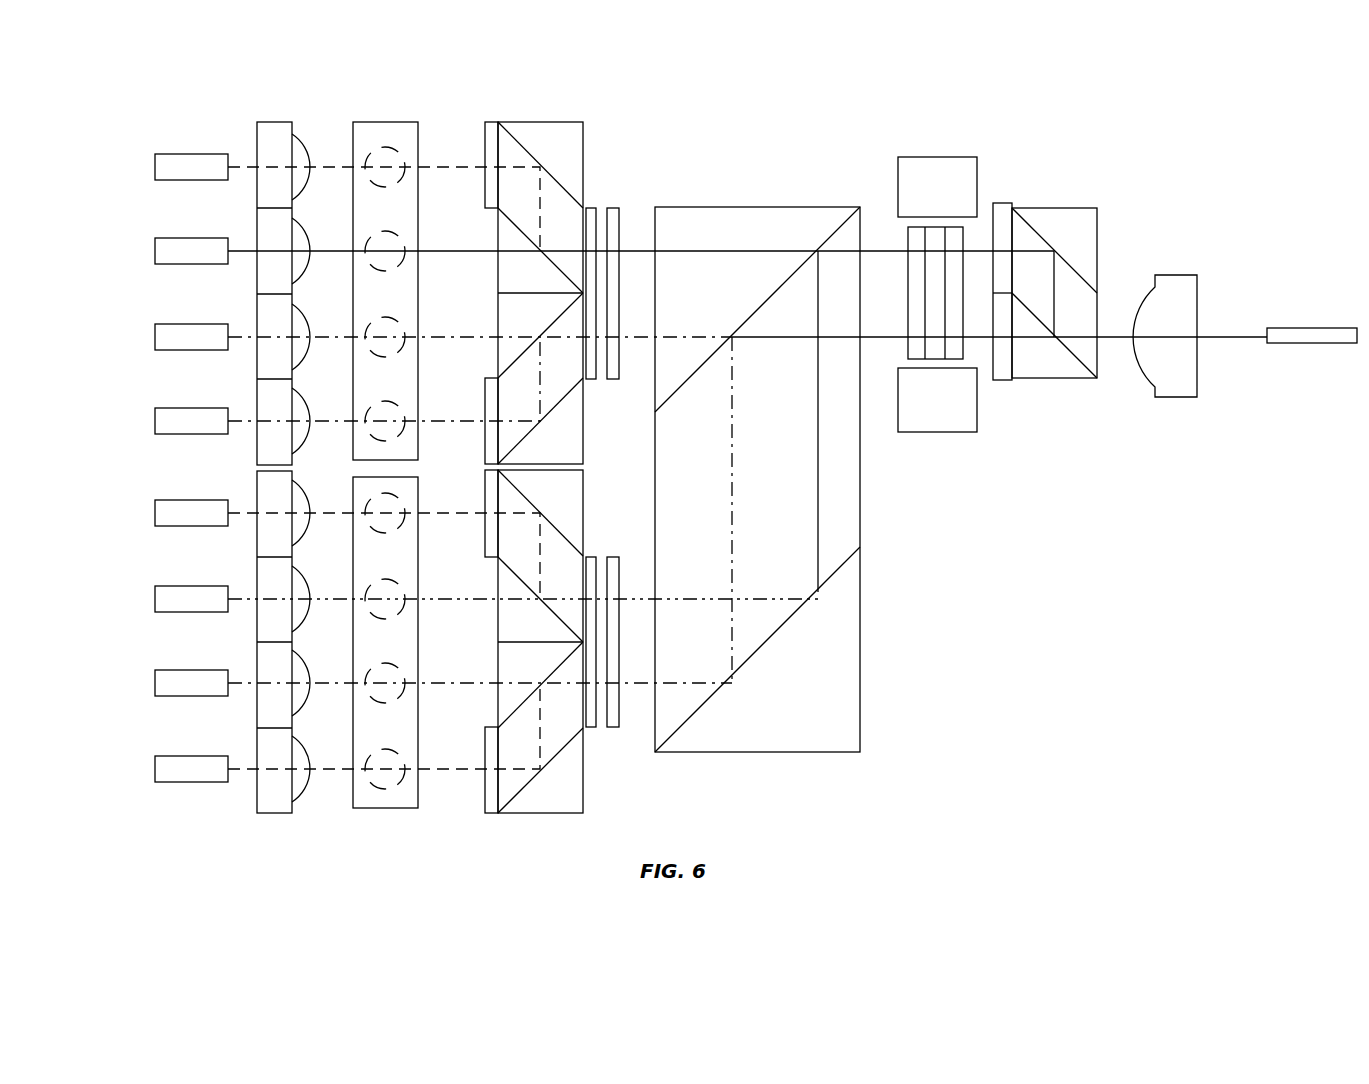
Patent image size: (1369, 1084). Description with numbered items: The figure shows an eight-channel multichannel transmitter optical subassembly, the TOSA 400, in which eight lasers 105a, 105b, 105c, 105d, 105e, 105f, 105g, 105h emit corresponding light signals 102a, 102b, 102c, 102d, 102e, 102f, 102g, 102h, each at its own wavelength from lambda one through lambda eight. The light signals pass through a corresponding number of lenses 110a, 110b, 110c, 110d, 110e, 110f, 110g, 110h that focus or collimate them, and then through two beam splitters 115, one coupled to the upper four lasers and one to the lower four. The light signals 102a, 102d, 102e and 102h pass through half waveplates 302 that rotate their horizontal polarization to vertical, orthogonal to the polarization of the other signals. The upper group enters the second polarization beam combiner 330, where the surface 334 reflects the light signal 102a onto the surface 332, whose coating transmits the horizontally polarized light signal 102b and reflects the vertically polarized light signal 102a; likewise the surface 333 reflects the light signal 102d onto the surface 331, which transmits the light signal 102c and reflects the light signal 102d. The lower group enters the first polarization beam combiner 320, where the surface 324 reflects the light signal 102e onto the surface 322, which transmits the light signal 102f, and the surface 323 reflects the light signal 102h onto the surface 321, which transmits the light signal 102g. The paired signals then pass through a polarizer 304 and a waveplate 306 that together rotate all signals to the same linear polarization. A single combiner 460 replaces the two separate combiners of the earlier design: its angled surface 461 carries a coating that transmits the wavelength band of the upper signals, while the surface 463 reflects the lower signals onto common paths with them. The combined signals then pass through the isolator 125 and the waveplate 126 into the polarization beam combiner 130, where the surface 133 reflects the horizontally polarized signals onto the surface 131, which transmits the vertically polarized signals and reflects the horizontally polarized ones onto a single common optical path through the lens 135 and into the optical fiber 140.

The lens 110a is at (267, 158).
The lens 110b is at (267, 242).
The lens 110c is at (267, 328).
The lens 110d is at (267, 412).
The lens 110e is at (267, 504).
The lens 110f is at (267, 590).
The lens 110g is at (267, 674).
The lens 110h is at (267, 760).
The laser 105a is at (177, 168).
The laser 105b is at (177, 252).
The laser 105c is at (177, 338).
The laser 105d is at (177, 422).
The laser 105e is at (177, 514).
The laser 105f is at (177, 600).
The laser 105g is at (177, 684).
The laser 105h is at (177, 770).
The light signal 102a is at (268, 168).
The light signal 102b is at (268, 252).
The light signal 102c is at (268, 338).
The light signal 102d is at (268, 422).
The light signal 102e is at (268, 514).
The light signal 102f is at (268, 600).
The light signal 102g is at (268, 684).
The light signal 102h is at (268, 770).
The beam splitter 115 is at (365, 135).
The waveplate 302 is at (490, 390).
The second polarization beam combiner 330 is at (500, 126).
The surface 334 is at (535, 158).
The surface 332 is at (513, 220).
The surface 331 is at (548, 330).
The surface 333 is at (540, 421).
The polarizer 304 is at (592, 210).
The waveplate 306 is at (613, 214).
The first polarization beam combiner 320 is at (506, 806).
The surface 324 is at (540, 513).
The surface 322 is at (550, 605).
The surface 321 is at (583, 778).
The surface 323 is at (533, 780).
The combiner 460 is at (850, 733).
The surface 461 is at (840, 228).
The surface 463 is at (820, 590).
The isolator 125 is at (975, 398).
The waveplate 126 is at (1003, 212).
The polarization beam combiner 130 is at (1055, 372).
The surface 131 is at (1080, 363).
The surface 133 is at (1033, 225).
The lens 135 is at (1185, 373).
The optical fiber 140 is at (1290, 338).
The multichannel TOSA 400 is at (1226, 136).